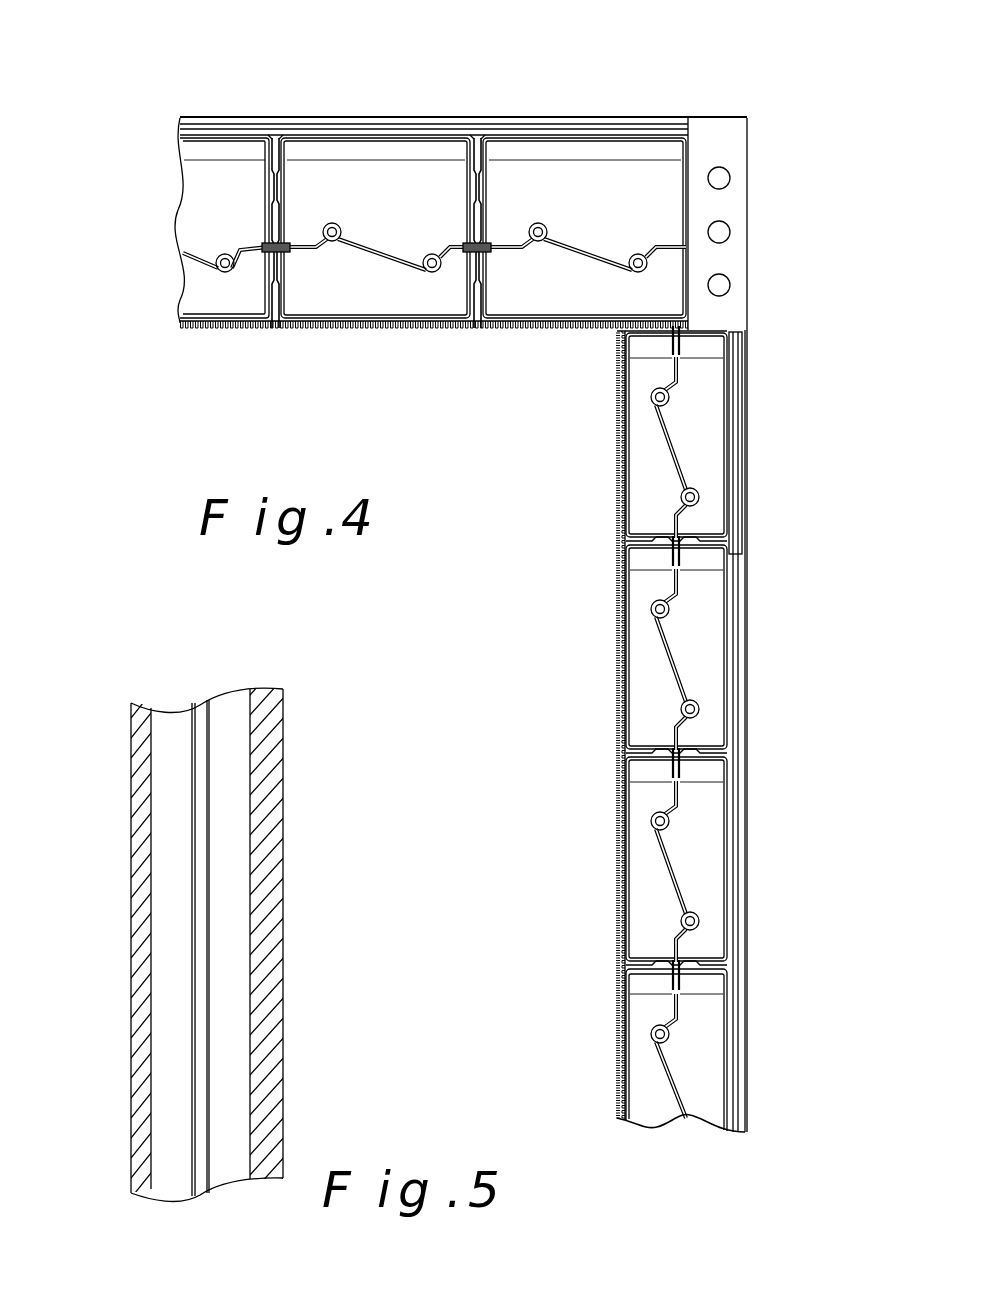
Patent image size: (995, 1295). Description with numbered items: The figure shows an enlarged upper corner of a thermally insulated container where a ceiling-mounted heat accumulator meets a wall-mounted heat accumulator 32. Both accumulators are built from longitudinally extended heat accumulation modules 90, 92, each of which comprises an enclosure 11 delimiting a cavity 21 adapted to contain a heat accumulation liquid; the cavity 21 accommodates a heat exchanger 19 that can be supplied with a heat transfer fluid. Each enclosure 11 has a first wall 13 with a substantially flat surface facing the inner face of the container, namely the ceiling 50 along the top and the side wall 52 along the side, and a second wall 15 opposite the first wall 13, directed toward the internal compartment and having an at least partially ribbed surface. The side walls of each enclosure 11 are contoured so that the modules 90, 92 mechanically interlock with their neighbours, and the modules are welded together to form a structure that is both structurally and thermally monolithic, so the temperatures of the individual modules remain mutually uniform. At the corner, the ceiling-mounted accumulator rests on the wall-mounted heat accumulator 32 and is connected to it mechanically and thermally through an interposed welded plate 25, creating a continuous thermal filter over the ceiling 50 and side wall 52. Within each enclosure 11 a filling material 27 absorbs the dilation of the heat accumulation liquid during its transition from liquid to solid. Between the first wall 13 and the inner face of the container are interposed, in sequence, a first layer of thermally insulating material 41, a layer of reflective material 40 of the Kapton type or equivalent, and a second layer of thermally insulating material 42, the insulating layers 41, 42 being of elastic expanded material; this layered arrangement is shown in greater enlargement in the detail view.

In FIG. 4, the enclosure 11 is at (268, 185).
In FIG. 5, the enclosure 11 is at (142, 742).
In FIG. 4, the first wall 13 is at (215, 136).
In FIG. 4, the second wall 15 is at (317, 330).
In FIG. 4, the heat exchanger 19 is at (400, 228).
In FIG. 4, the cavity 21 is at (207, 222).
In FIG. 4, the plate 25 is at (625, 332).
In FIG. 4, the filling material 27 is at (297, 136).
In FIG. 4, the wall-mounted heat accumulator 32 is at (618, 842).
In FIG. 4, the layer of reflective material 40 is at (533, 127).
In FIG. 5, the layer of reflective material 40 is at (197, 905).
In FIG. 4, the first layer of thermally insulating material 41 is at (557, 130).
In FIG. 5, the first layer of thermally insulating material 41 is at (172, 968).
In FIG. 4, the second layer of thermally insulating material 42 is at (510, 127).
In FIG. 5, the second layer of thermally insulating material 42 is at (232, 960).
In FIG. 4, the ceiling 50 is at (331, 140).
In FIG. 5, the ceiling 50 is at (250, 785).
In FIG. 4, the side wall 52 is at (740, 205).
In FIG. 4, the heat accumulation module 90 is at (225, 294).
In FIG. 4, the heat accumulation module 92 is at (648, 473).